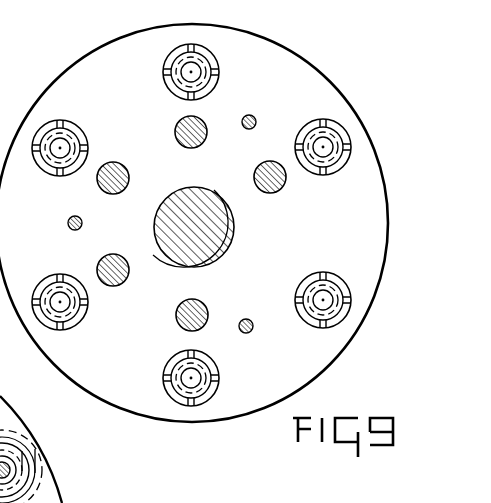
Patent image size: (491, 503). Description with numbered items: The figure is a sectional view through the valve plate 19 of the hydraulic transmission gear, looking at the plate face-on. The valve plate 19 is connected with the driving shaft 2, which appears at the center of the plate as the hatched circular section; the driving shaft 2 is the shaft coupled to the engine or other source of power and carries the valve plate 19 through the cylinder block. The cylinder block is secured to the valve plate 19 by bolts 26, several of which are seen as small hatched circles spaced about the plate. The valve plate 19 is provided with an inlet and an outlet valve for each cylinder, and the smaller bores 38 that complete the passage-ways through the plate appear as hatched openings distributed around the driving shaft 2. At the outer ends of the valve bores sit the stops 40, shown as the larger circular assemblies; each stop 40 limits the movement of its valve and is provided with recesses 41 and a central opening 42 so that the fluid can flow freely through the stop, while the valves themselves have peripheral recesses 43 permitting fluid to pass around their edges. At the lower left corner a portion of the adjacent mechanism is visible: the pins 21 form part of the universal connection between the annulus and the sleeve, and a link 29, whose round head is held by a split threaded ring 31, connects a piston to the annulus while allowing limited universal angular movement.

The driving shaft 2 is at (226, 231).
The valve plate 19 is at (380, 215).
The pins 21 is at (3, 398).
The bolts 26 is at (71, 229).
The links 29 is at (10, 470).
The split threaded rings 31 is at (22, 455).
The smaller bores 38 is at (257, 180).
The stops 40 is at (70, 124).
The recesses 41 is at (53, 165).
The central openings 42 is at (53, 149).
The recesses 43 is at (88, 150).